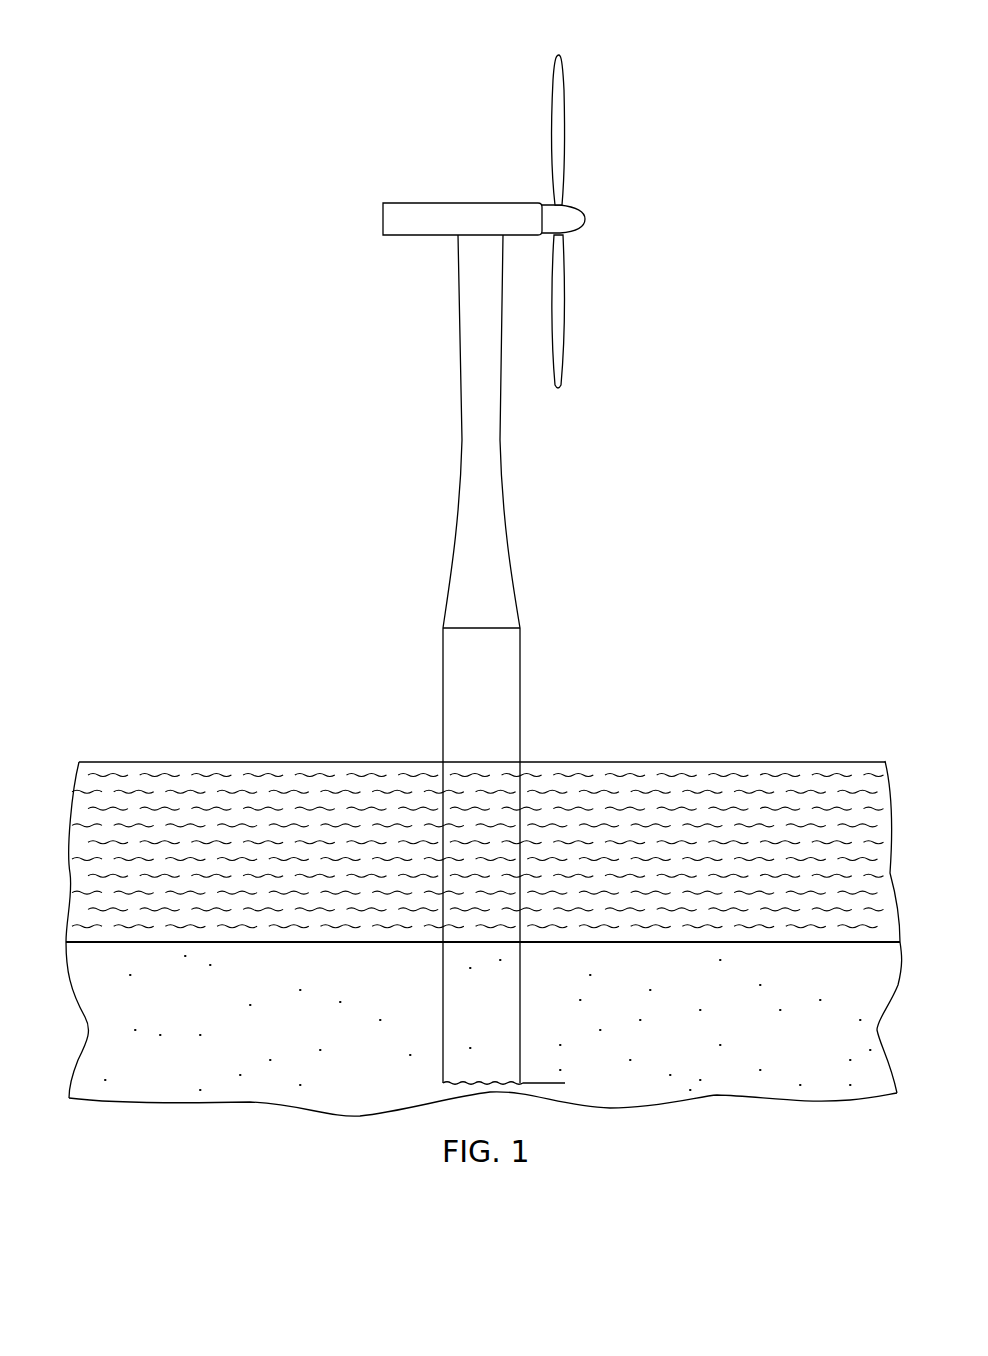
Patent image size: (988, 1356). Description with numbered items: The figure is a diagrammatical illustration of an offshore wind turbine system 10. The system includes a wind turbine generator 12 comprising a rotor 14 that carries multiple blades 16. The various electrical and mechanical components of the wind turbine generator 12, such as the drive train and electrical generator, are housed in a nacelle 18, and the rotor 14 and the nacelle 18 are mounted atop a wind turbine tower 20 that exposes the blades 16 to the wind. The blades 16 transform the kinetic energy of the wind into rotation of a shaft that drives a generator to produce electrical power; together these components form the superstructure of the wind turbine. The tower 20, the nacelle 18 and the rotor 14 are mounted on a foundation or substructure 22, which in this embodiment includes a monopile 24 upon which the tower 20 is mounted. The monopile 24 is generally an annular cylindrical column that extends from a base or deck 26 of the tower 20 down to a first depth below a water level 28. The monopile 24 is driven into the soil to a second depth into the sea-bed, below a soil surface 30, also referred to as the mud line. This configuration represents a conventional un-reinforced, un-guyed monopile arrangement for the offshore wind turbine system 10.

The offshore wind turbine system 10 is at (165, 43).
The wind turbine generator 12 is at (655, 157).
The rotor 14 is at (586, 214).
The blades 16 is at (561, 80).
The nacelle 18 is at (410, 203).
The wind turbine tower 20 is at (498, 457).
The foundation or substructure 22 is at (332, 671).
The monopile 24 is at (517, 747).
The base or deck 26 is at (475, 629).
The water level 28 is at (778, 759).
The soil surface 30 is at (82, 941).